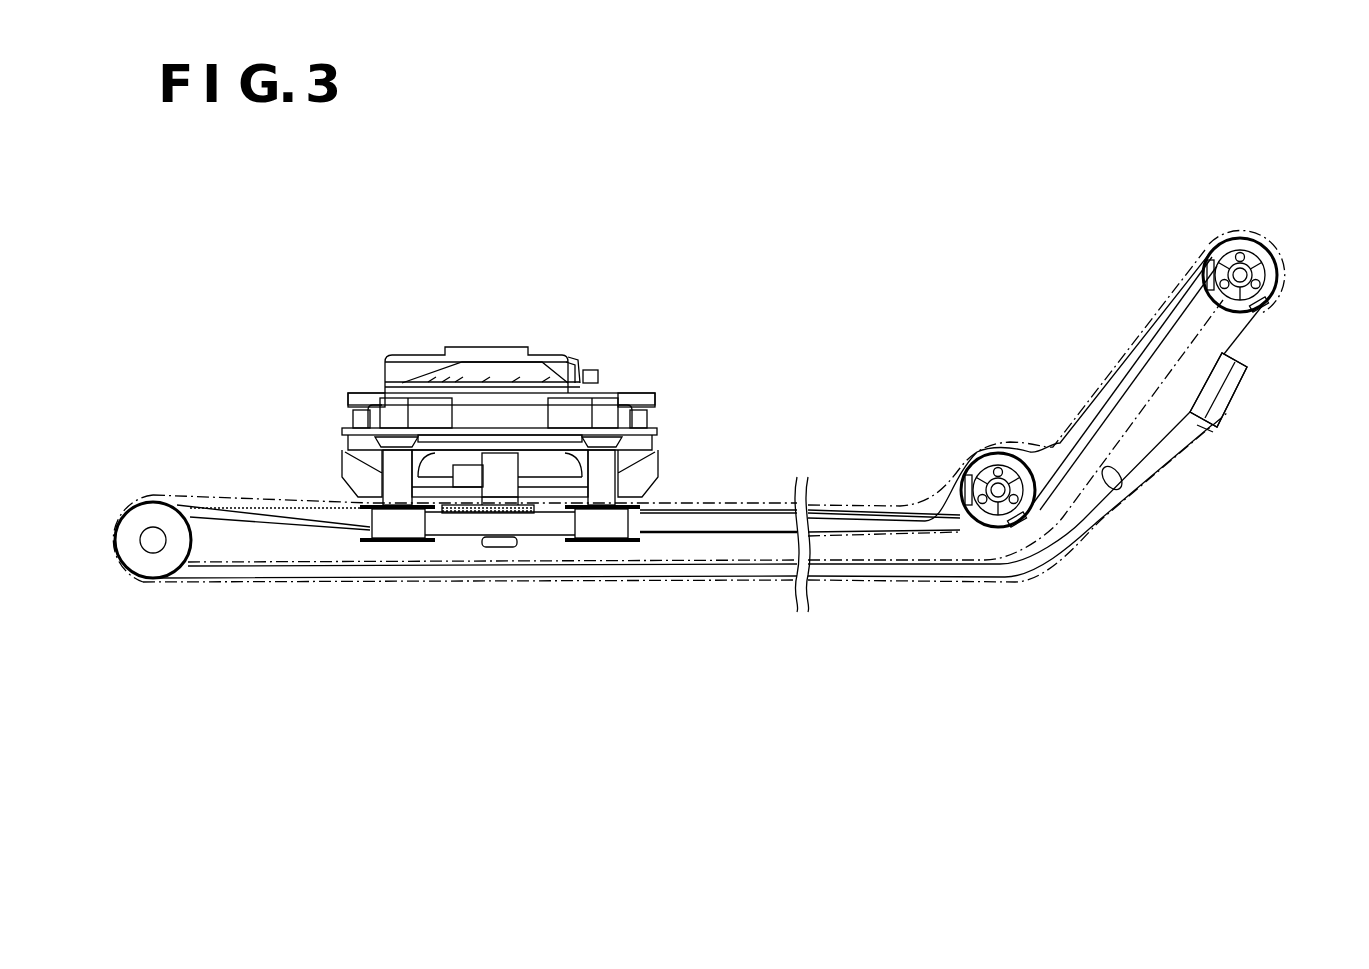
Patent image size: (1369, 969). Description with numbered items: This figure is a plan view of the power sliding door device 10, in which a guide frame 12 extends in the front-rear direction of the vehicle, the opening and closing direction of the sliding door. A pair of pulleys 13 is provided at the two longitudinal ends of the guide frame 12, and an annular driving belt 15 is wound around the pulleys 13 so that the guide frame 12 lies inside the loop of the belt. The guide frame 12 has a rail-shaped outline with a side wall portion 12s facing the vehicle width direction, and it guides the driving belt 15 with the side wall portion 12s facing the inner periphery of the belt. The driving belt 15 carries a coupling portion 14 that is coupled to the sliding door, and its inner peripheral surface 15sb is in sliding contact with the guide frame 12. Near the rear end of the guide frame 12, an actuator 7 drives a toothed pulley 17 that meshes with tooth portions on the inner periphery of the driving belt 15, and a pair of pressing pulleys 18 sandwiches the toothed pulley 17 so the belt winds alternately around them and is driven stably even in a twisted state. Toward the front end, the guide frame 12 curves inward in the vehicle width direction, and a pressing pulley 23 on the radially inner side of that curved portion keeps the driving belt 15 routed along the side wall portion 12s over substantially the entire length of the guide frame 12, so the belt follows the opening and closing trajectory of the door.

The actuator 7 is at (575, 350).
The power sliding door device 10 is at (1279, 777).
The guide frame 12 is at (1023, 540).
The side wall portion 12s is at (860, 565).
The pulley 13 is at (143, 512).
The coupling portion 14 is at (1238, 395).
The driving belt 15 is at (1092, 513).
The inner peripheral surface 15sb is at (1121, 486).
The toothed pulley 17 is at (525, 545).
The pressing pulley 18 is at (390, 545).
The pressing pulley 23 is at (988, 458).